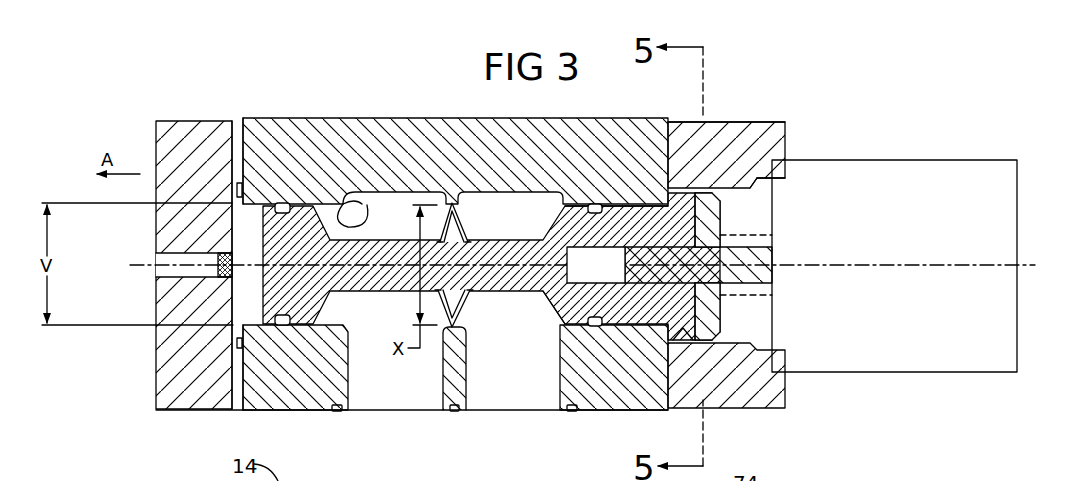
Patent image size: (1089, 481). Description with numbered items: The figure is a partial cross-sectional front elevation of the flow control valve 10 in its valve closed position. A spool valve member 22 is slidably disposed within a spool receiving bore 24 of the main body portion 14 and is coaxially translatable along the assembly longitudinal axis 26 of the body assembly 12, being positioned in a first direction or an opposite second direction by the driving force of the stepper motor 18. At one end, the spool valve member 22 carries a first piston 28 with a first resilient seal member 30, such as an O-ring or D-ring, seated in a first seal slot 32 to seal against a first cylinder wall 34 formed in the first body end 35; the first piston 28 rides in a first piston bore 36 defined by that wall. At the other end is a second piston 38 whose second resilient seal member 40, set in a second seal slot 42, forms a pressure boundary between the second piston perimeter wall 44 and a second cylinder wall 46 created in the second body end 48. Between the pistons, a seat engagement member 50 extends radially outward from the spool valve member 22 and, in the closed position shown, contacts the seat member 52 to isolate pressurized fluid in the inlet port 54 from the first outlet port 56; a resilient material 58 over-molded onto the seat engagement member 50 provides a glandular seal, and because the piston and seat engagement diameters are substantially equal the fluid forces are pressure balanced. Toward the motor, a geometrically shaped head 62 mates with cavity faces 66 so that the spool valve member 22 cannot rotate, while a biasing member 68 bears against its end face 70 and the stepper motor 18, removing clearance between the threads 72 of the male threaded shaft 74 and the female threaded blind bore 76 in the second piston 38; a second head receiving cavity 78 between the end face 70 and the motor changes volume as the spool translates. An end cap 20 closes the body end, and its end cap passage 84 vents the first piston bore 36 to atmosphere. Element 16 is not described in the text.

The flow control valve 10 is at (788, 110).
The body assembly 12 is at (393, 114).
The main body portion 14 is at (284, 203).
The lower right housing block 16 is at (768, 383).
The stepper motor 18 is at (928, 175).
The end cap 20 is at (175, 393).
The spool valve member 22 is at (347, 287).
The spool receiving bore 24 is at (403, 203).
The assembly longitudinal axis 26 is at (148, 262).
The first piston 28 is at (297, 318).
The first resilient seal member 30 is at (283, 204).
The first seal slot 32 is at (283, 327).
The first cylinder wall 34 is at (331, 206).
The first body end 35 is at (253, 380).
The first piston bore 36 is at (247, 304).
The second piston 38 is at (653, 393).
The second resilient seal member 40 is at (598, 204).
The second seal slot 42 is at (593, 205).
The second piston perimeter wall 44 is at (607, 328).
The second cylinder wall 46 is at (555, 309).
The second body end 48 is at (663, 398).
The seat engagement member 50 is at (457, 228).
The seat member 52 is at (452, 200).
The inlet port 54 is at (505, 396).
The first outlet port 56 is at (410, 396).
The resilient material 58 is at (463, 213).
The geometrically shaped head 62 is at (702, 340).
The cavity faces 66 is at (757, 218).
The biasing member 68 is at (748, 297).
The end face 70 is at (723, 325).
The threads 72 is at (737, 194).
The male threaded shaft 74 is at (705, 230).
The female threaded blind bore 76 is at (618, 255).
The second head receiving cavity 78 is at (767, 222).
The end cap passage 84 is at (189, 259).